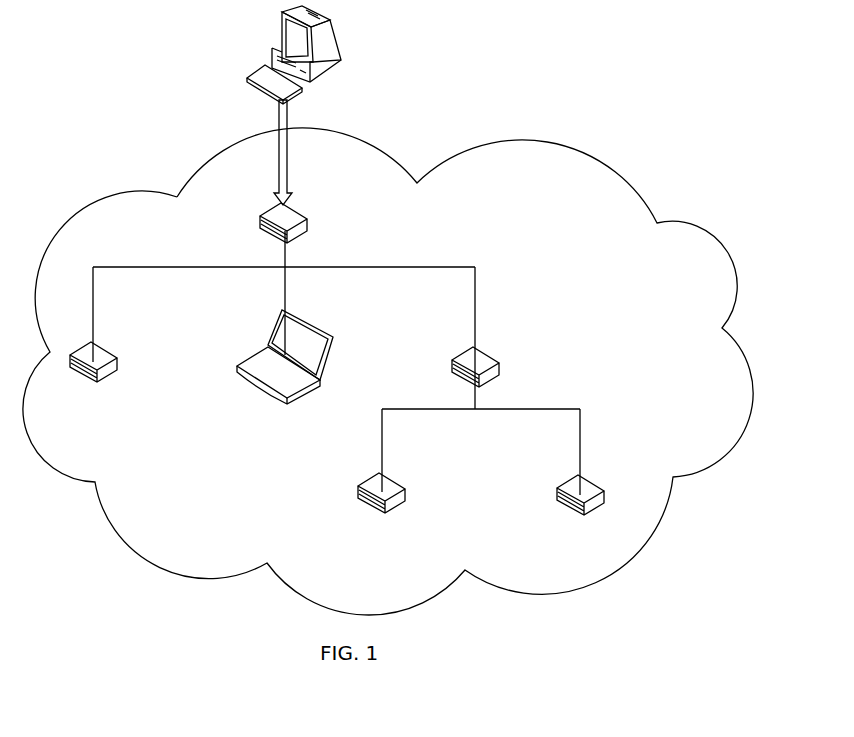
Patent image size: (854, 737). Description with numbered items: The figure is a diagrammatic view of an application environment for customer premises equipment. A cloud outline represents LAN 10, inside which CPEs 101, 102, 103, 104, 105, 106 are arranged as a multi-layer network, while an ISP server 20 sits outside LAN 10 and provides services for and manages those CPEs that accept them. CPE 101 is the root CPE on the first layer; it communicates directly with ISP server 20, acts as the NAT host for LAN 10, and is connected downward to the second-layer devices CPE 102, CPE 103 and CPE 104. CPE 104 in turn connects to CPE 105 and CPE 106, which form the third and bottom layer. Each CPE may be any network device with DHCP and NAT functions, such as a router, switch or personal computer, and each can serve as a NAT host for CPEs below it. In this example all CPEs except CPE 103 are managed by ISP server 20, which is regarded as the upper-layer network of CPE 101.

The LAN 10 is at (500, 142).
The ISP server 20 is at (343, 50).
The CPE 101 is at (307, 222).
The CPE 102 is at (118, 362).
The CPE 103 is at (304, 323).
The CPE 104 is at (496, 356).
The CPE 105 is at (604, 494).
The CPE 106 is at (403, 488).